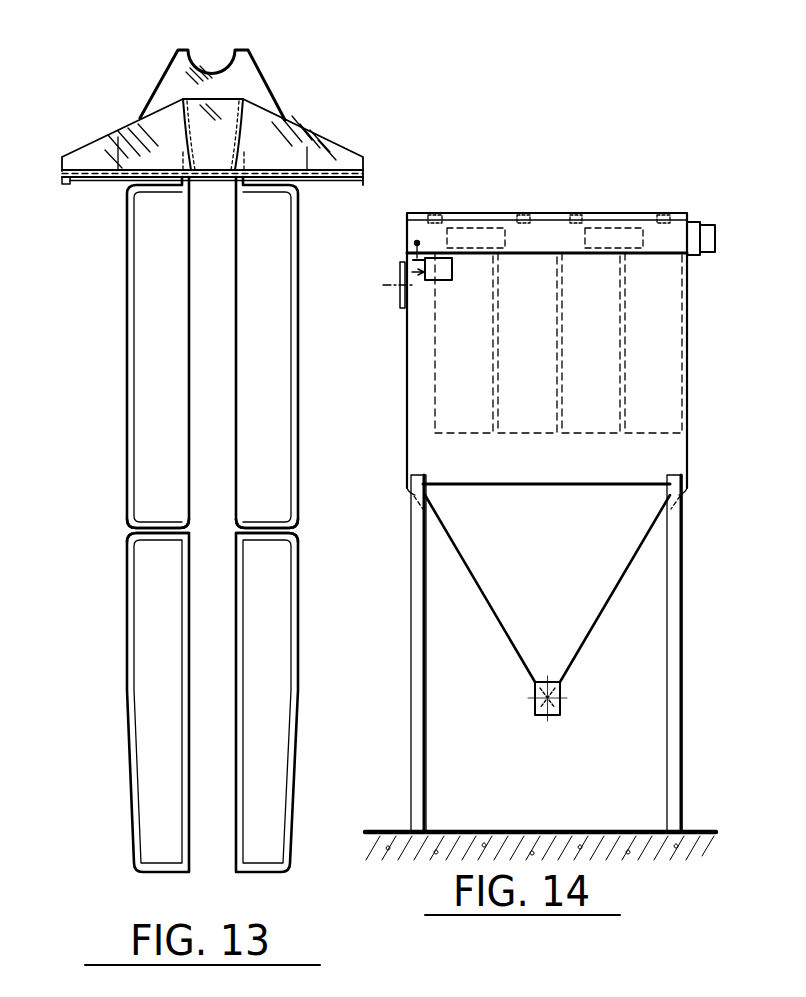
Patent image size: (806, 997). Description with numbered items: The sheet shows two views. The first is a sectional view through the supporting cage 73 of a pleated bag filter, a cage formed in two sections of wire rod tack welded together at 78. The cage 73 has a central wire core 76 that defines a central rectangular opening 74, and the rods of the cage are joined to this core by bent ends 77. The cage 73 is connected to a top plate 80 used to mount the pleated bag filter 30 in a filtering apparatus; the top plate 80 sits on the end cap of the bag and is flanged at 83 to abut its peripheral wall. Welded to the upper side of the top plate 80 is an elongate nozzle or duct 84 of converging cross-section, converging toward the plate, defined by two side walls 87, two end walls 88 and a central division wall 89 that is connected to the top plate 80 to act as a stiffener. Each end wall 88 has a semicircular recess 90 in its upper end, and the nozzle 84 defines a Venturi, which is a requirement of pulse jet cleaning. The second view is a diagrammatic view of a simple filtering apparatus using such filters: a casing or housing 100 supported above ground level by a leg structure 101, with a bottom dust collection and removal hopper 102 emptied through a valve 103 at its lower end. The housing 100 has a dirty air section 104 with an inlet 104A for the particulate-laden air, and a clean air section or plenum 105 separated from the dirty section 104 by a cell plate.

In FIG. 13, the semicircular recess 90 is at (228, 52).
In FIG. 13, the end wall 88 is at (182, 88).
In FIG. 13, the central division wall 89 is at (128, 132).
In FIG. 13, the side wall 87 is at (190, 143).
In FIG. 13, the elongate nozzle or duct 84 is at (225, 138).
In FIG. 13, the flange 83 is at (365, 180).
In FIG. 13, the top plate 80 is at (320, 182).
In FIG. 13, the bent ends 77 is at (157, 196).
In FIG. 13, the central wire core 76 is at (180, 352).
In FIG. 13, the tack weld 78 is at (148, 537).
In FIG. 13, the central opening 74 is at (205, 280).
In FIG. 13, the cage 73 is at (318, 611).
In FIG. 14, the clean air section or plenum 105 is at (557, 217).
In FIG. 14, the inlet 104A is at (398, 293).
In FIG. 14, the pleated bag filter 30 is at (505, 373).
In FIG. 14, the casing or housing 100 is at (690, 458).
In FIG. 14, the dirty air section 104 is at (416, 450).
In FIG. 14, the leg structure 101 is at (701, 623).
In FIG. 14, the hopper 102 is at (568, 625).
In FIG. 14, the valve 103 is at (535, 700).